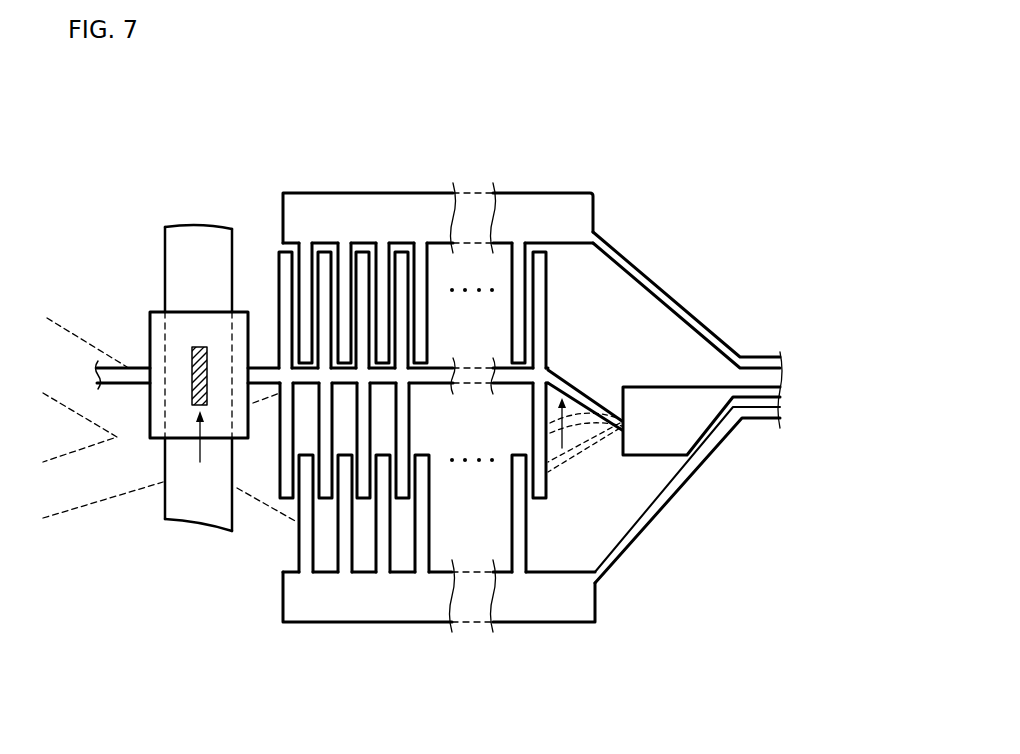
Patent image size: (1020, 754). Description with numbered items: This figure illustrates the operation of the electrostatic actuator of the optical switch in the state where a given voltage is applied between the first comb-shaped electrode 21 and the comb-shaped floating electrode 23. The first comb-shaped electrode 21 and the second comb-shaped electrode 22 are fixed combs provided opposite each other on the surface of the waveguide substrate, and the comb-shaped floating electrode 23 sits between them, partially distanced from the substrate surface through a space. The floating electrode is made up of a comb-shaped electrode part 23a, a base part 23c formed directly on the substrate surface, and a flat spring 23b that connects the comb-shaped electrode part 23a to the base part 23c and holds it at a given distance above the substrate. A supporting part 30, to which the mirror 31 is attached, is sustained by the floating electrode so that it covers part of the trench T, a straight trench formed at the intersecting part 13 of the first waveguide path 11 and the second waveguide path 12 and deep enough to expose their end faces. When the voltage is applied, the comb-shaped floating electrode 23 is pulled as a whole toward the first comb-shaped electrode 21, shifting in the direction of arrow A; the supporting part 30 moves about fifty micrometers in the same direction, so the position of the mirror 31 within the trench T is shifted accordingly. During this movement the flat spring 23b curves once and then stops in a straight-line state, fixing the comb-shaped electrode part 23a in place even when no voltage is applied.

The first waveguide path 11 is at (78, 327).
The second waveguide path 12 is at (98, 502).
The intersecting part 13 is at (137, 455).
The first comb-shaped electrode 21 is at (551, 203).
The second comb-shaped electrode 22 is at (558, 603).
The comb-shaped floating electrode 23 is at (835, 209).
The comb-shaped electrode part 23a is at (537, 325).
The flat spring 23b is at (582, 395).
The base part 23c is at (703, 393).
The supporting part 30 is at (158, 320).
The mirror 31 is at (212, 345).
The trench T is at (183, 247).
The arrow A is at (568, 437).